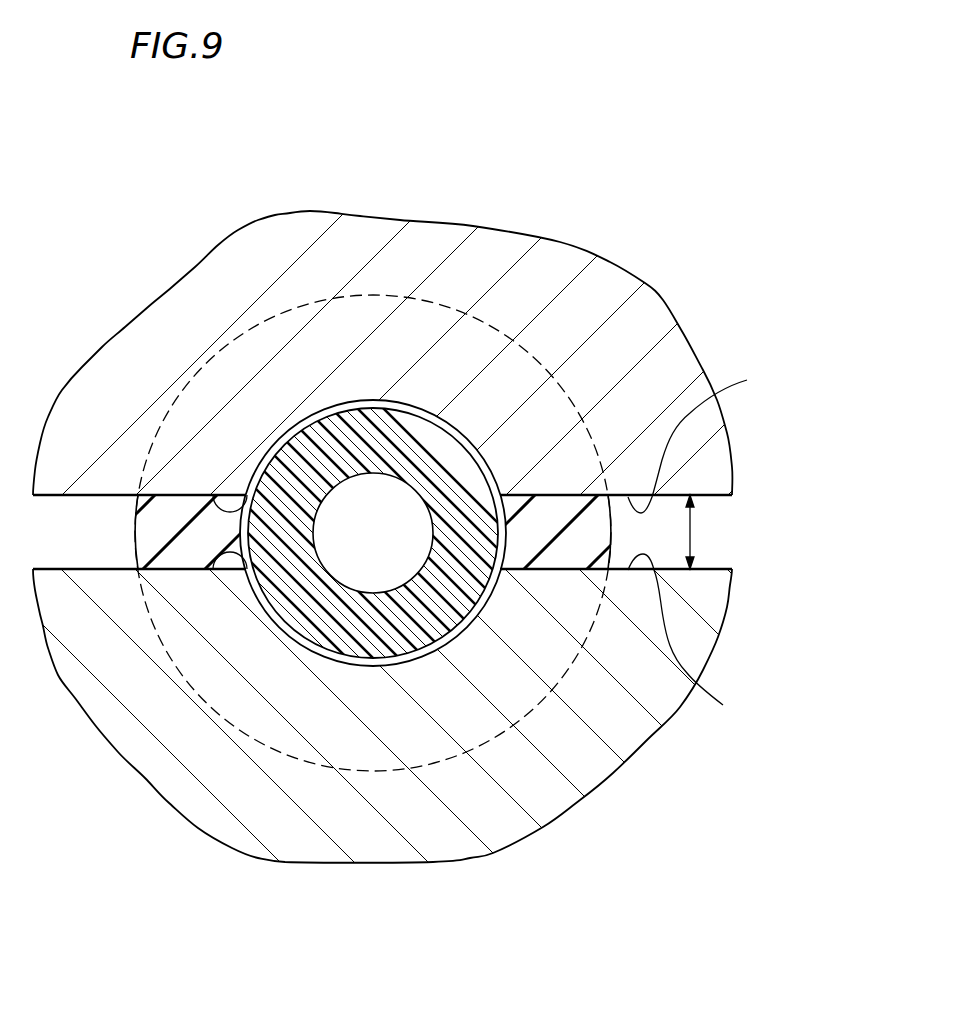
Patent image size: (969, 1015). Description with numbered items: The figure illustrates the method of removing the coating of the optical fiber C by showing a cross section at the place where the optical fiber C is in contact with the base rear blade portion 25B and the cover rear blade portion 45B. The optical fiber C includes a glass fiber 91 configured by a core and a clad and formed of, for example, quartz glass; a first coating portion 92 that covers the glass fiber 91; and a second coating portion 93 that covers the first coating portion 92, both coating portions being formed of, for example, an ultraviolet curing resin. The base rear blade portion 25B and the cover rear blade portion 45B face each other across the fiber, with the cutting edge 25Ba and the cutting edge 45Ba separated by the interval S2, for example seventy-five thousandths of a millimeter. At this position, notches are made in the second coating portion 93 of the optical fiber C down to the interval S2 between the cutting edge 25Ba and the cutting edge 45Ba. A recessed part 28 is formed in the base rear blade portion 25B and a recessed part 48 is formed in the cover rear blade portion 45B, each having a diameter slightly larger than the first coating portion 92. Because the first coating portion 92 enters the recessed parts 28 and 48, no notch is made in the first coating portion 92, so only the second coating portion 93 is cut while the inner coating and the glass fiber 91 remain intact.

The cover rear blade portion 45B is at (628, 417).
The base rear blade portion 25B is at (625, 677).
The cutting edge 45Ba is at (709, 439).
The cutting edge 25Ba is at (697, 640).
The recessed part 28 is at (230, 572).
The recessed part 48 is at (213, 495).
The glass fiber 91 is at (417, 503).
The first coating portion 92 is at (440, 418).
The second coating portion 93 is at (423, 325).
The optical fiber C is at (391, 295).
The interval S2 is at (701, 532).